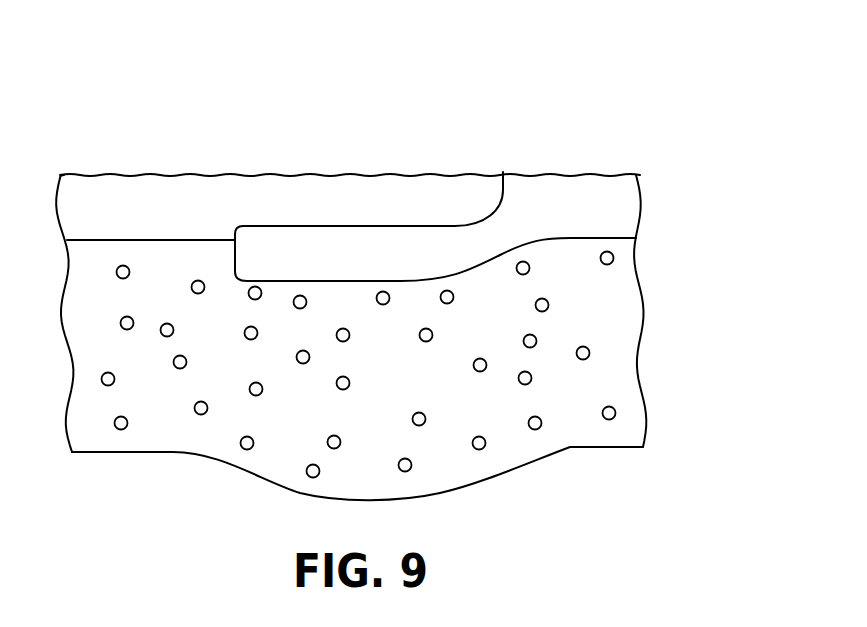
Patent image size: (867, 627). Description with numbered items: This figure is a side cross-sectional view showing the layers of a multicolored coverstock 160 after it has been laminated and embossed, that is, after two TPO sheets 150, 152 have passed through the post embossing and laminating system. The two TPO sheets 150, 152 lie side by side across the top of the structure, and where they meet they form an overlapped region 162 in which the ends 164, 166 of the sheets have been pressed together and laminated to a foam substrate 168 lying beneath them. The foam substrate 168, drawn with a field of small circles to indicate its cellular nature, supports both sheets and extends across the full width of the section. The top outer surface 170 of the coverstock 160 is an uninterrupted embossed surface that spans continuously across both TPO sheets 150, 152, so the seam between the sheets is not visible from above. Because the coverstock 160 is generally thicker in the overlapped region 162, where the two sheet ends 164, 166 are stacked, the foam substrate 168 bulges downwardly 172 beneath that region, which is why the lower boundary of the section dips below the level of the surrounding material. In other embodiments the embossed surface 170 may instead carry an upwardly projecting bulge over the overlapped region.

The TPO sheet 150 is at (150, 222).
The TPO sheet 152 is at (585, 217).
The coverstock 160 is at (608, 148).
The overlapped region 162 is at (376, 125).
The end of TPO sheet 164 is at (432, 192).
The end of TPO sheet 166 is at (317, 247).
The foam substrate 168 is at (617, 297).
The top outer surface 170 is at (197, 175).
The downward bulge 172 is at (240, 496).